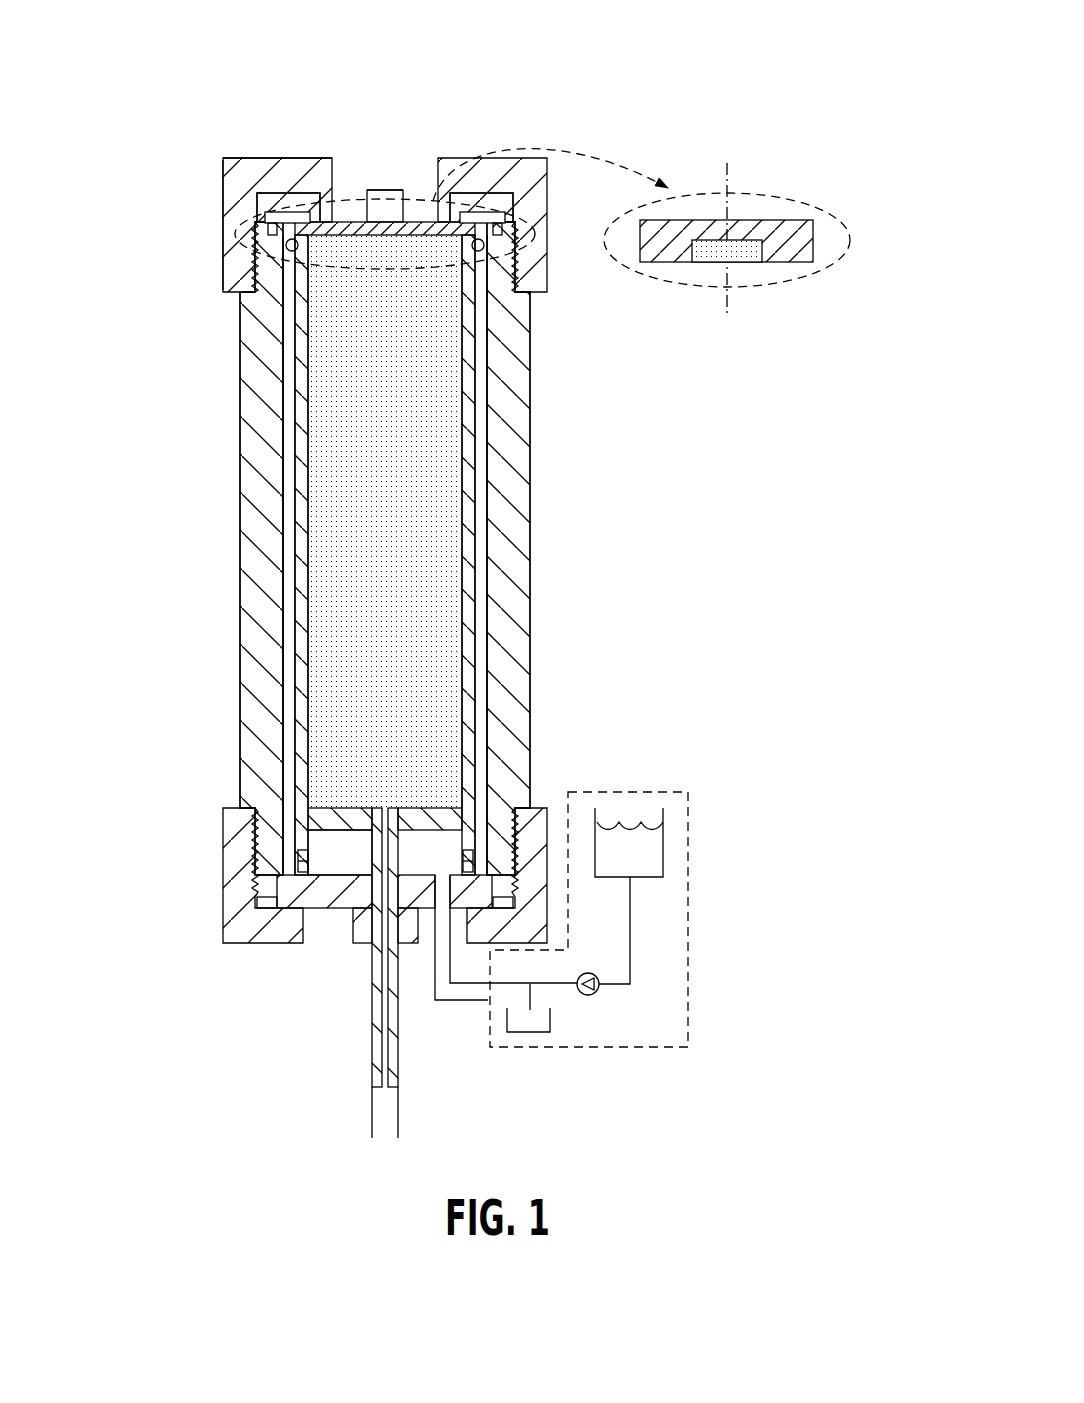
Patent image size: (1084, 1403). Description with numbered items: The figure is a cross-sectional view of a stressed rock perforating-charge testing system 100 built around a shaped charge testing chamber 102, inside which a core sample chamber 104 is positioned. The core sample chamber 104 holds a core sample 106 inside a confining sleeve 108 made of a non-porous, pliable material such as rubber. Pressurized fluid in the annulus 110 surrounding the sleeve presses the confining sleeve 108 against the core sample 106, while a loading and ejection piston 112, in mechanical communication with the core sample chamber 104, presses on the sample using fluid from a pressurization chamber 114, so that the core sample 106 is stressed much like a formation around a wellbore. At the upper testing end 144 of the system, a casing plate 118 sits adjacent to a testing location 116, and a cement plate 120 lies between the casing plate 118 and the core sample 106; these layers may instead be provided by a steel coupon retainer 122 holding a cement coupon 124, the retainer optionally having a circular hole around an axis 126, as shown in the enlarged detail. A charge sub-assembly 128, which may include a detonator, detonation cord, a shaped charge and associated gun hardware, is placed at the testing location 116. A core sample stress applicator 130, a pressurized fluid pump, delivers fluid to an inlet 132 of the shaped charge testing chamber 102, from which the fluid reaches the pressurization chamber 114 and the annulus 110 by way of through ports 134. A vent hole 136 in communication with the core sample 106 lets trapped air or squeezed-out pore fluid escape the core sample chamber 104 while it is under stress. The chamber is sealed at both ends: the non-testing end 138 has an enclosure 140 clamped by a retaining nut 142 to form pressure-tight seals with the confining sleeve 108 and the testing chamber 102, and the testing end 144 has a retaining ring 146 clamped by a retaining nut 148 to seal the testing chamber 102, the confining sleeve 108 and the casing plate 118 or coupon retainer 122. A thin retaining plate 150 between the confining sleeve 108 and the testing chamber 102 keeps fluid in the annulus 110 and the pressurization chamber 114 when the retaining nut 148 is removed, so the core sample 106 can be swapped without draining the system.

The stressed rock perforating-charge testing system 100 is at (252, 78).
The shaped charge testing chamber 102 is at (510, 470).
The core sample chamber 104 is at (485, 548).
The core sample 106 is at (450, 443).
The confining sleeve 108 is at (465, 395).
The annulus 110 is at (290, 592).
The loading and ejection piston 112 is at (423, 807).
The pressurization chamber 114 is at (340, 850).
The testing location 116 is at (381, 186).
The casing plate 118 is at (288, 225).
The cement plate 120 is at (355, 241).
The coupon retainer 122 is at (807, 238).
The coupon 124 is at (748, 263).
The axis 126 is at (728, 181).
The charge sub-assembly 128 is at (404, 190).
The core sample stress applicator 130 is at (697, 940).
The inlet 132 is at (465, 1000).
The through ports 134 is at (300, 856).
The vent hole 136 is at (380, 1072).
The non-testing end 138 is at (330, 985).
The enclosure 140 is at (330, 912).
The retaining nut 142 is at (223, 925).
The testing end 144 is at (198, 132).
The retaining ring 146 is at (327, 157).
The retaining nut 148 is at (221, 208).
The thin retaining plate 150 is at (507, 215).